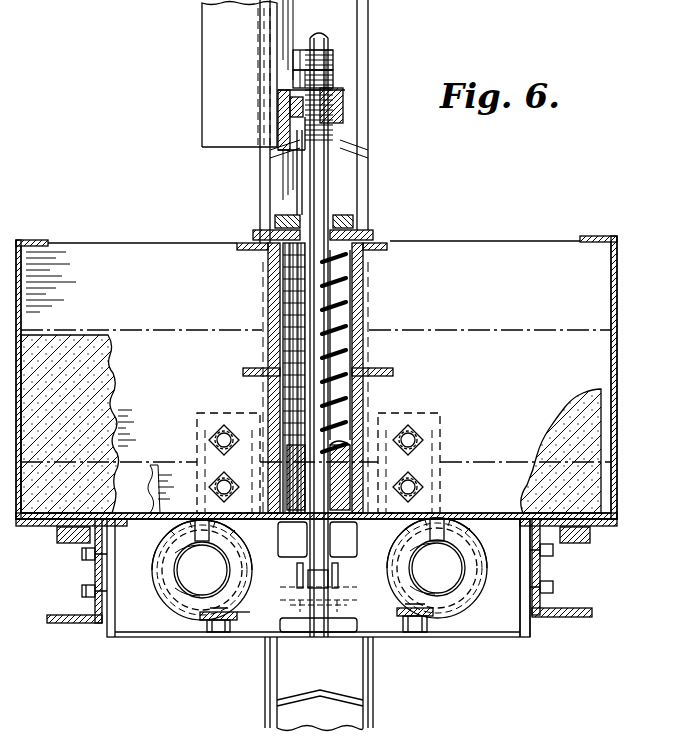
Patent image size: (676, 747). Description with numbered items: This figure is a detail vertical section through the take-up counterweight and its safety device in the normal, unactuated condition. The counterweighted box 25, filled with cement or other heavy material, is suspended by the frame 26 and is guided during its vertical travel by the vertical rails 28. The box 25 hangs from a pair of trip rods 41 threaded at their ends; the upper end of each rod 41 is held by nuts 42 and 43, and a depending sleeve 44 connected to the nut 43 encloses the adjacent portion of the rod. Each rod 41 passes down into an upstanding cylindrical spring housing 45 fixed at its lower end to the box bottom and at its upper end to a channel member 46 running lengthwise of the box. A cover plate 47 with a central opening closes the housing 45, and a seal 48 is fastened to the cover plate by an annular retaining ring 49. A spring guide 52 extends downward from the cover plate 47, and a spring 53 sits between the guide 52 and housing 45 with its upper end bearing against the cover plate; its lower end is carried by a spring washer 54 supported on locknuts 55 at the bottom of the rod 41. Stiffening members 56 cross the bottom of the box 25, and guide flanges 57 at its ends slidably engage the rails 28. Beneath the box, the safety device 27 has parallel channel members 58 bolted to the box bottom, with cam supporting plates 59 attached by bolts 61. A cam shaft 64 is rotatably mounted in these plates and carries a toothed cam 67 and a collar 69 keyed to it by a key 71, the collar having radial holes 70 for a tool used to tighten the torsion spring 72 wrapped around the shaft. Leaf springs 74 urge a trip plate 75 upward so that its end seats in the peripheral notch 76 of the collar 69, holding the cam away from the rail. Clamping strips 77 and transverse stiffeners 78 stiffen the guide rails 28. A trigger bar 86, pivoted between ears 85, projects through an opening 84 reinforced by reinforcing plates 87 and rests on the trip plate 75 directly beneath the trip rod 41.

The counterweighted box 25 is at (493, 248).
The frame 26 is at (222, 100).
The safety device 27 is at (506, 628).
The vertical rails 28 is at (368, 182).
The trip rods 41 is at (365, 364).
The nuts 42 is at (338, 80).
The nuts 43 is at (343, 106).
The depending sleeve 44 is at (330, 205).
The spring housings 45 is at (352, 404).
The channel members 46 is at (268, 321).
The cover plates 47 is at (373, 234).
The seal 48 is at (275, 221).
The annular retaining ring 49 is at (297, 211).
The spring guides 52 is at (352, 272).
The springs 53 is at (285, 384).
The spring washer 54 is at (285, 462).
The locknuts 55 is at (340, 484).
The stiffening members 56 is at (130, 470).
The guide flanges 57 is at (245, 423).
The channel members 58 is at (60, 615).
The cam supporting plates 59 is at (485, 637).
The bolts 61 is at (82, 590).
The cam shaft 64 is at (190, 580).
The cam 67 is at (200, 628).
The collar 69 is at (178, 612).
The radial holes 70 is at (209, 560).
The key 71 is at (192, 540).
The torsion spring 72 is at (230, 545).
The leaf springs 74 is at (235, 630).
The trip plate 75 is at (250, 630).
The peripheral notch 76 is at (210, 620).
The clamping strips 77 is at (265, 722).
The transverse stiffeners 78 is at (332, 700).
The opening 84 is at (325, 615).
The ears 85 is at (297, 579).
The trigger bar 86 is at (305, 630).
The reinforcing plates 87 is at (348, 538).